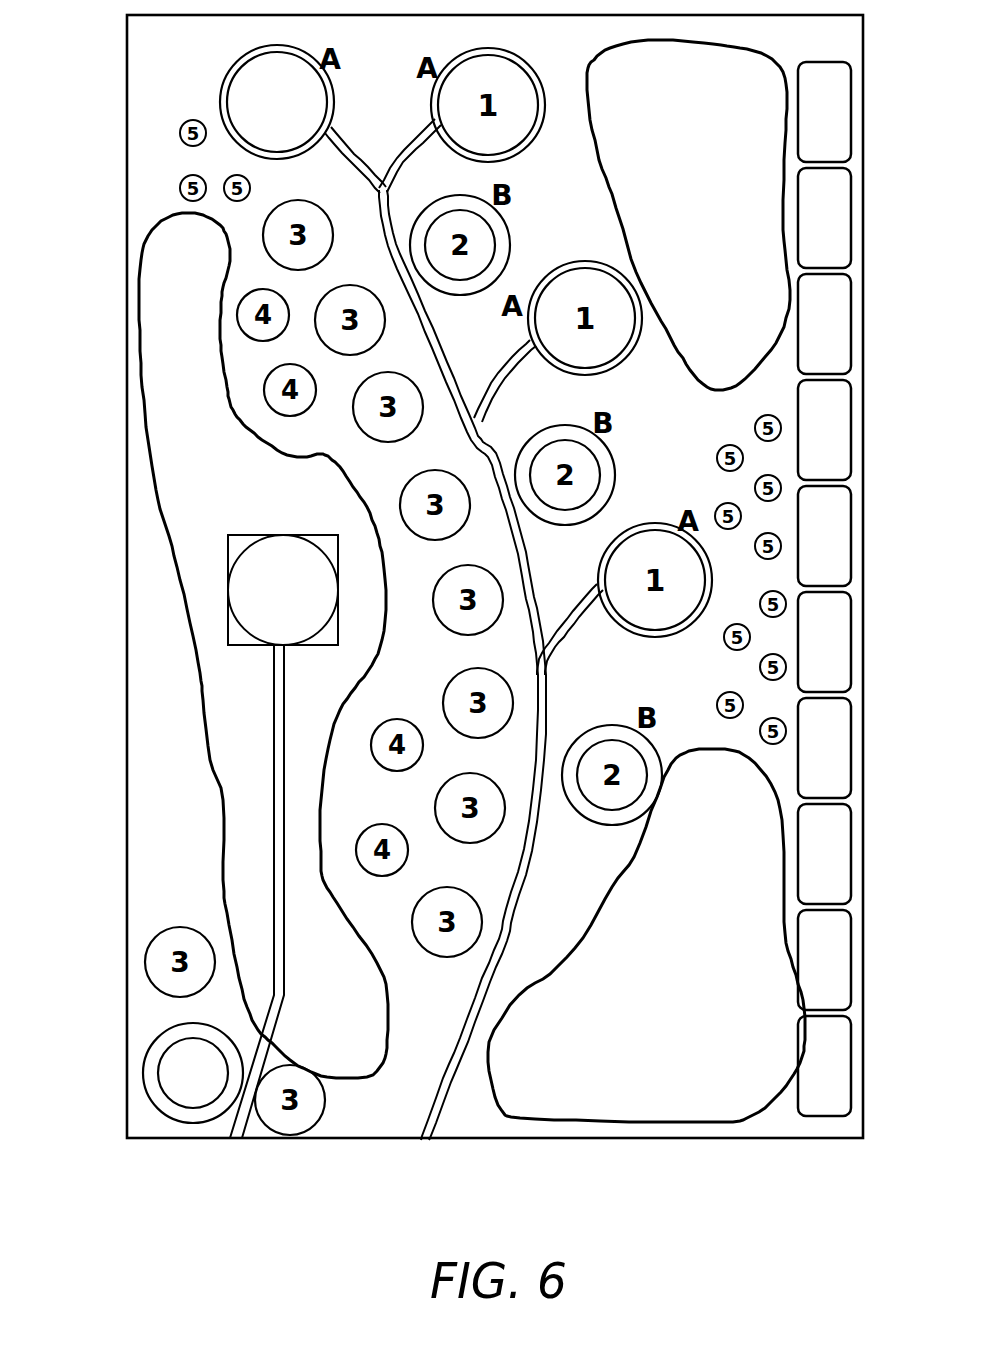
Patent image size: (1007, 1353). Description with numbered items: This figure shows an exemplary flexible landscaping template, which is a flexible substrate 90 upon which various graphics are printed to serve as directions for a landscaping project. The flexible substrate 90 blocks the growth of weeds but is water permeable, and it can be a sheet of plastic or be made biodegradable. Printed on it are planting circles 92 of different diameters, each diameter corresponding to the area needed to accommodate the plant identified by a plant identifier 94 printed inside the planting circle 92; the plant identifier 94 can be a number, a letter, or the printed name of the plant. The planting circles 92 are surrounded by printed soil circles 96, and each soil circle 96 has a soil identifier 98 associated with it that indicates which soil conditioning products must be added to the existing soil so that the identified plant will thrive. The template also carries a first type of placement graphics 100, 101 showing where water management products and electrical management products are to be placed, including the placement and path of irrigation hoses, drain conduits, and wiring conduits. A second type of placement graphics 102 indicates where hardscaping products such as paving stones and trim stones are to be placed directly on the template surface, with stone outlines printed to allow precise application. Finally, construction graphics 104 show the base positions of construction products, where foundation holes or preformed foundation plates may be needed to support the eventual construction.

The flexible substrate 90 is at (127, 612).
The planting circle 92 is at (243, 97).
The plant identifier 94 is at (272, 98).
The soil circle 96 is at (152, 1087).
The soil identifier 98 is at (213, 1013).
The first type of placement graphics 100 is at (250, 813).
The first type of placement graphics 101 is at (282, 850).
The second type of placement graphics 102 is at (463, 1067).
The construction graphics 104 is at (258, 580).